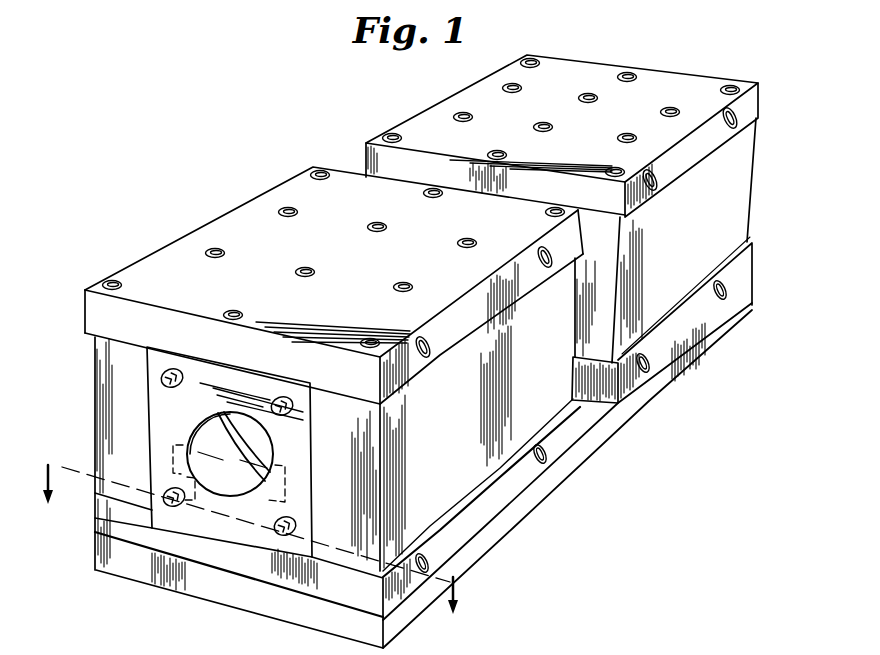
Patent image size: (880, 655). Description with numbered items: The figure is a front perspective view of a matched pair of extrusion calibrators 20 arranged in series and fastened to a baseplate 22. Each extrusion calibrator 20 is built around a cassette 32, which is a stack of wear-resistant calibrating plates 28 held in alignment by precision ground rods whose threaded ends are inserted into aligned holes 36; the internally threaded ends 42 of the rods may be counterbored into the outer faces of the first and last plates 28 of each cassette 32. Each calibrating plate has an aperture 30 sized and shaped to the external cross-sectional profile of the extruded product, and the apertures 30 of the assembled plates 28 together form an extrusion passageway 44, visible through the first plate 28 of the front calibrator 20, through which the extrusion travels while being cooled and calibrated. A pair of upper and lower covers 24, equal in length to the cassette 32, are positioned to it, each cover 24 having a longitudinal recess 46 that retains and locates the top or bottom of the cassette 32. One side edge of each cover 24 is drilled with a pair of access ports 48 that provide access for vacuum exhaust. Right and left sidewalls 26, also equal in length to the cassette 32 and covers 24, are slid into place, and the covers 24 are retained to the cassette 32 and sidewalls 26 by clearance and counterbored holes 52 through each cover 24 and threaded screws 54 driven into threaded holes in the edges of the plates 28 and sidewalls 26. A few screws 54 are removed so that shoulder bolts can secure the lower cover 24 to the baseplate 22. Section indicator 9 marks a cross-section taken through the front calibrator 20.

The extrusion calibrator 20 is at (378, 91).
The baseplate 22 is at (592, 446).
The upper and lower covers 24 is at (248, 213).
The right and left sidewalls 26 is at (117, 393).
The calibrating plates 28 is at (212, 518).
The aperture 30 is at (200, 518).
The cassette 32 is at (246, 523).
The aligned holes 36 is at (172, 502).
The internally threaded ends 42 is at (297, 520).
The extrusion passageway 44 is at (240, 460).
The longitudinal recess 46 is at (300, 380).
The access ports 48 is at (430, 342).
The clearance and counterbored holes 52 is at (553, 212).
The threaded screws 54 is at (613, 170).
The section line 9- 9 is at (261, 540).